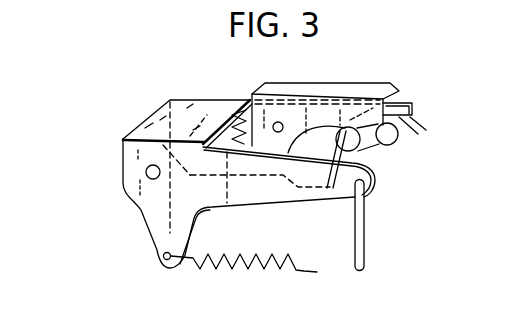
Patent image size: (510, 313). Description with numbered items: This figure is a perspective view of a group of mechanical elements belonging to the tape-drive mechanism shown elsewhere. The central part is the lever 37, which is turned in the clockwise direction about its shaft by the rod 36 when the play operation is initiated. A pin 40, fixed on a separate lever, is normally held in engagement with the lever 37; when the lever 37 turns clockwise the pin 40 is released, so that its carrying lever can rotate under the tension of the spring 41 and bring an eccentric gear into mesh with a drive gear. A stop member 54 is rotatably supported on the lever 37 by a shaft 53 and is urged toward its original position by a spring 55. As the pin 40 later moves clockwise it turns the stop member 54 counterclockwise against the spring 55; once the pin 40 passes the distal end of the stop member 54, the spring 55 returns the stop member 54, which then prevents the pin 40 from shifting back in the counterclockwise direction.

The rod 36 is at (365, 223).
The lever 37 is at (126, 152).
The pin 40 is at (408, 131).
The spring 41 is at (270, 260).
The shaft 53 is at (278, 121).
The stop member 54 is at (340, 83).
The spring 55 is at (229, 103).